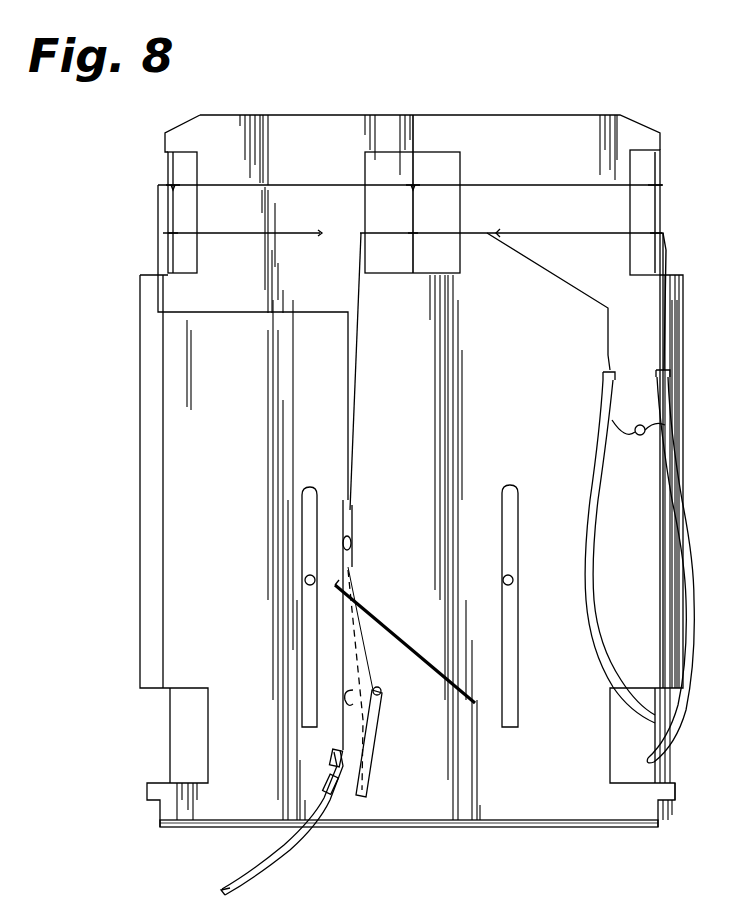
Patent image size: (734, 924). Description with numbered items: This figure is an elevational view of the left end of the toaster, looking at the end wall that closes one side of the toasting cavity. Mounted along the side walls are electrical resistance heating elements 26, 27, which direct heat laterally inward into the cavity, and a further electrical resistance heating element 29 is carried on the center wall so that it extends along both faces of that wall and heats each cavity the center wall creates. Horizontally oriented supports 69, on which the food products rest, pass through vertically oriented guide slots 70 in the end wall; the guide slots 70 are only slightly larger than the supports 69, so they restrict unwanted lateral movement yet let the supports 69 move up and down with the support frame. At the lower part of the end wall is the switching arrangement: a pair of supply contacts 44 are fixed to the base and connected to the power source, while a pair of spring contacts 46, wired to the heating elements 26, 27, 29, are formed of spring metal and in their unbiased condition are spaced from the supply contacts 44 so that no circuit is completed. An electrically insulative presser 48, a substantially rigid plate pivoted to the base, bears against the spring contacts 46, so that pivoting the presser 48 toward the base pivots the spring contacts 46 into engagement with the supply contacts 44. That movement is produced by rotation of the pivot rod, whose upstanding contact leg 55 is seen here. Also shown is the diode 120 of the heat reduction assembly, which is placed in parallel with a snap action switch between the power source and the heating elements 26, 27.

The electrical resistance heating element 26 is at (666, 248).
The electrical resistance heating element 27 is at (176, 236).
The electrical resistance heating element 29 is at (412, 240).
The supply contacts 44 is at (352, 693).
The spring contacts 46 is at (355, 548).
The presser 48 is at (408, 610).
The contact leg 55 is at (372, 735).
The supports 69 is at (305, 580).
The guide slots 70 is at (312, 500).
The diode 120 is at (636, 434).